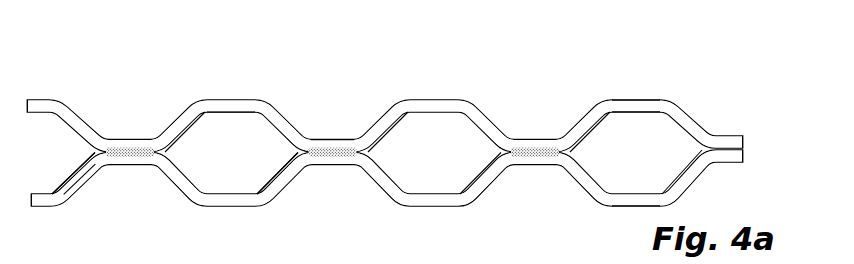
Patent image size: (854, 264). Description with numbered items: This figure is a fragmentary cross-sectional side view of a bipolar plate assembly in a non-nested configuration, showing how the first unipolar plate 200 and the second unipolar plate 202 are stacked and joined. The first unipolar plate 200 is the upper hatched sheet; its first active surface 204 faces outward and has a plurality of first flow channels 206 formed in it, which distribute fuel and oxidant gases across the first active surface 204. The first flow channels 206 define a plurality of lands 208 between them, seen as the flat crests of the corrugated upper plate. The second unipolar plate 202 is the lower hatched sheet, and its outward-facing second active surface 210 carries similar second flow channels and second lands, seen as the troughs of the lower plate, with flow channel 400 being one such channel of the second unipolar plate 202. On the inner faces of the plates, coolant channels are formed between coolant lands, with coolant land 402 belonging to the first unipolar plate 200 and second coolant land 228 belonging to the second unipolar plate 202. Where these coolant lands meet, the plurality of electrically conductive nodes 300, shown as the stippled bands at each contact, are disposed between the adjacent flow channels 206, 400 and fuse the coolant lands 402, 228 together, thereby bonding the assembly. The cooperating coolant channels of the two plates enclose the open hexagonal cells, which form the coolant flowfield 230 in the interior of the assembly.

The first unipolar plate 200 is at (743, 36).
The second unipolar plate 202 is at (693, 178).
The first active surface 204 is at (540, 90).
The first flow channels 206 is at (333, 157).
The lands 208 is at (433, 100).
The second active surface 210 is at (441, 225).
The second coolant lands 228 is at (78, 177).
The coolant flowfield 230 is at (206, 140).
The electrically conductive nodes 300 is at (131, 163).
The flow channel 400 is at (293, 176).
The coolant land 402 is at (82, 156).